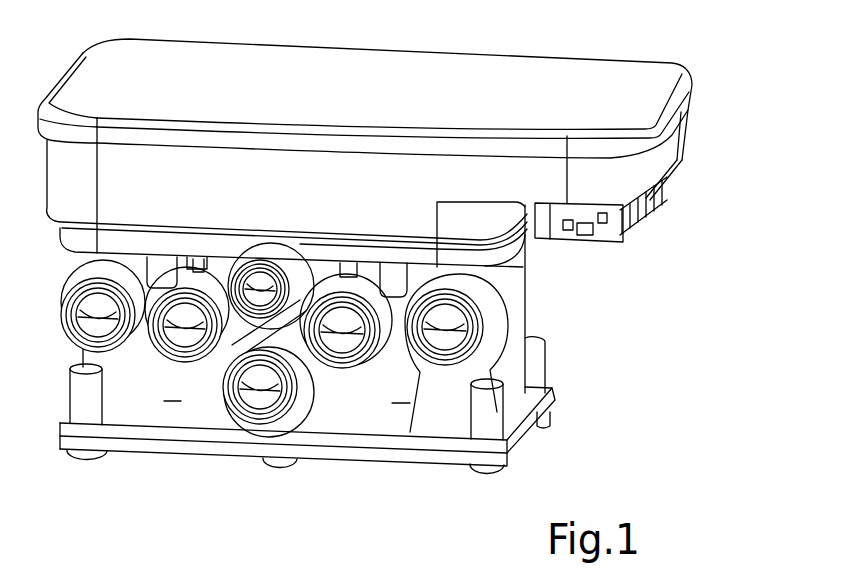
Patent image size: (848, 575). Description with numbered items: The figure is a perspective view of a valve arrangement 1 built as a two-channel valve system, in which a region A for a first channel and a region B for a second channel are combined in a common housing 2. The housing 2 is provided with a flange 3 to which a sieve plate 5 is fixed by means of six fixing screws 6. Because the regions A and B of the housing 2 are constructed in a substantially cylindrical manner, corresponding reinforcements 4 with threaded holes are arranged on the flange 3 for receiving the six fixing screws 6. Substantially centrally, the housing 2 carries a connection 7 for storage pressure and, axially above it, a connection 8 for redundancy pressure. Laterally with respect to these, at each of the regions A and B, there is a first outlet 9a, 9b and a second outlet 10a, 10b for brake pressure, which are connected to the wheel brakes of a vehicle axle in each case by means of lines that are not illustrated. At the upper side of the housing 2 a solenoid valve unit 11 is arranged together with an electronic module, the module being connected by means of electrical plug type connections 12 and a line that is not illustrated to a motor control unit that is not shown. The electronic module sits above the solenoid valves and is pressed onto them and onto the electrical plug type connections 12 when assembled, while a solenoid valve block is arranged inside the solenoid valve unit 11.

The valve arrangement 1 is at (703, 34).
The housing 2 is at (527, 293).
The flange 3 is at (553, 393).
The reinforcements 4 is at (543, 363).
The sieve plate 5 is at (520, 440).
The fixing screws 6 is at (500, 470).
The connection for storage pressure 7 is at (324, 370).
The connection for redundancy pressure 8 is at (245, 322).
The first outlet 9a is at (66, 336).
The first outlet 9b is at (445, 366).
The second outlet 10a is at (157, 349).
The second outlet 10b is at (355, 367).
The solenoid valve unit 11 is at (687, 123).
The electrical plug type connections 12 is at (647, 214).